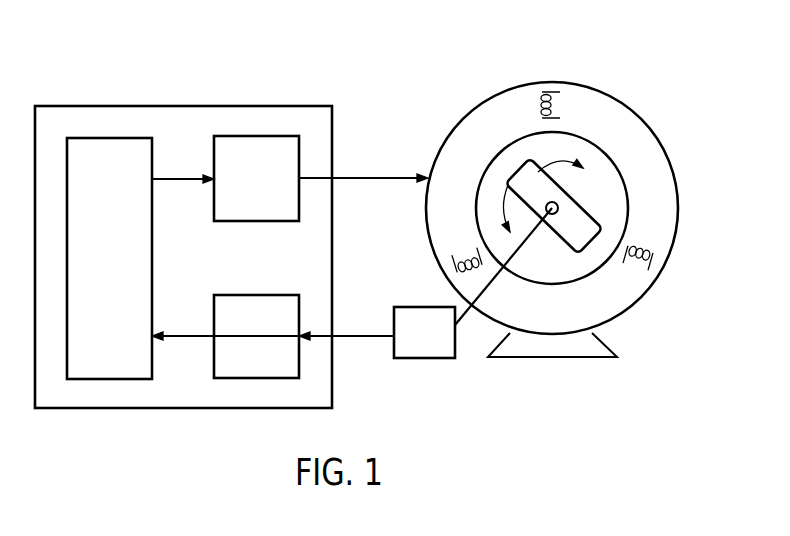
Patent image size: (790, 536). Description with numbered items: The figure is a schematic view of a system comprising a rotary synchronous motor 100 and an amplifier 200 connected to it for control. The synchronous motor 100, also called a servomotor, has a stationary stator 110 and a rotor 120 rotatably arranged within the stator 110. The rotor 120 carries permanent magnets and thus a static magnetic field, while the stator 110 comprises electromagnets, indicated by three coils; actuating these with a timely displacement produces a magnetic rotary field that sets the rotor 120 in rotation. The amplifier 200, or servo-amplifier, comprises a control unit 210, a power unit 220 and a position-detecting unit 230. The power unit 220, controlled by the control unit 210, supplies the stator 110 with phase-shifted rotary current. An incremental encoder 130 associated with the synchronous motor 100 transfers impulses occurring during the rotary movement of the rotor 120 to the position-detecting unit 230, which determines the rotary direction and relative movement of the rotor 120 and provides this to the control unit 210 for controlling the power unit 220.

The rotary synchronous motor 100 is at (629, 78).
The stator 110 is at (627, 303).
The rotor 120 is at (582, 225).
The incremental encoder 130 is at (423, 348).
The amplifier 200 is at (155, 86).
The control unit 210 is at (126, 269).
The power unit 220 is at (274, 194).
The position-detecting unit 230 is at (274, 351).